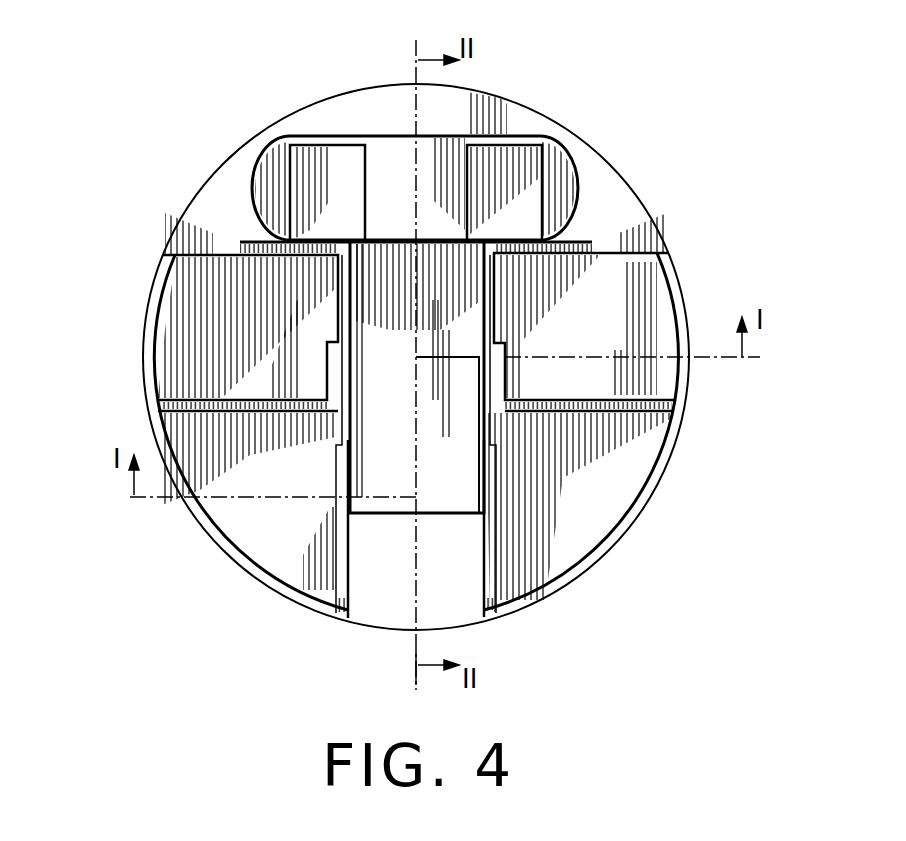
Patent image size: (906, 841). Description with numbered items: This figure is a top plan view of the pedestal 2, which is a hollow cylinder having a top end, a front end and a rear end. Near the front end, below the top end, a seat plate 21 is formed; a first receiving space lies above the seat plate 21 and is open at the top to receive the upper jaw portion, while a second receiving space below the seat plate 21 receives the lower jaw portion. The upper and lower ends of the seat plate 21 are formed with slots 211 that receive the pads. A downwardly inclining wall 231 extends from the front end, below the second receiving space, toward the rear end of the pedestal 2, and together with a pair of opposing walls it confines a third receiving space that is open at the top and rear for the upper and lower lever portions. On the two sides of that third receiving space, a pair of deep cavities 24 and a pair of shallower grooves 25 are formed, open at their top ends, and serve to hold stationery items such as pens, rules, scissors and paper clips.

The pedestal 2 is at (215, 131).
The seat plate 21 is at (383, 157).
The slots 211 is at (284, 147).
The inclining wall 231 is at (442, 468).
The deep cavities 24 is at (145, 357).
The shallower grooves 25 is at (253, 520).